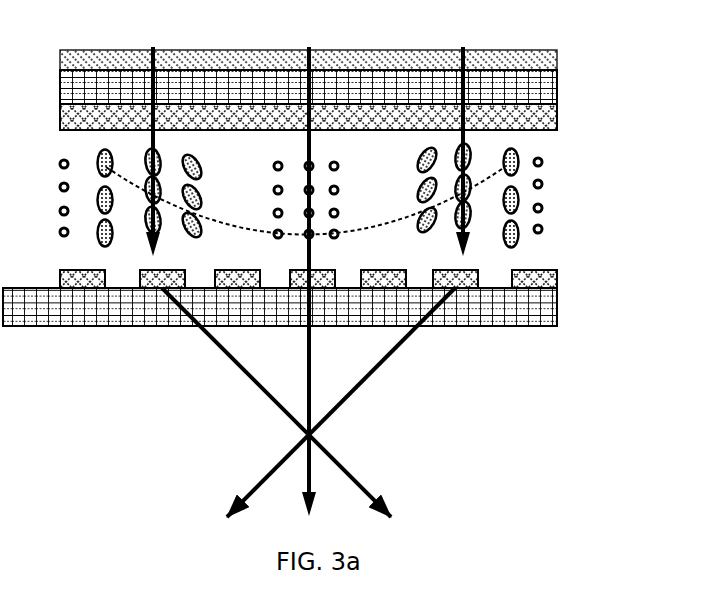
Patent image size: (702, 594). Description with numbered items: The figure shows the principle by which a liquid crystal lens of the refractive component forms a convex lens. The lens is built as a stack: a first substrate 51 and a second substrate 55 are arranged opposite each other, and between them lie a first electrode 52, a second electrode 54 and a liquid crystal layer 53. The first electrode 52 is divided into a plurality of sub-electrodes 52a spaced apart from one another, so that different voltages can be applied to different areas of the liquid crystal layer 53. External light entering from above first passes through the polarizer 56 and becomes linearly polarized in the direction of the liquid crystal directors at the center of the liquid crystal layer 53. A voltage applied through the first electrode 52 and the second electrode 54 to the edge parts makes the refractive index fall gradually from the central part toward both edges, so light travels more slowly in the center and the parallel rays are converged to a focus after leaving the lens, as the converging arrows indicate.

The first substrate 51 is at (558, 307).
The first electrode 52 is at (558, 279).
The sub-electrodes 52a is at (465, 290).
The liquid crystal layer 53 is at (550, 193).
The second electrode 54 is at (558, 117).
The second substrate 55 is at (558, 84).
The polarizer 56 is at (558, 61).